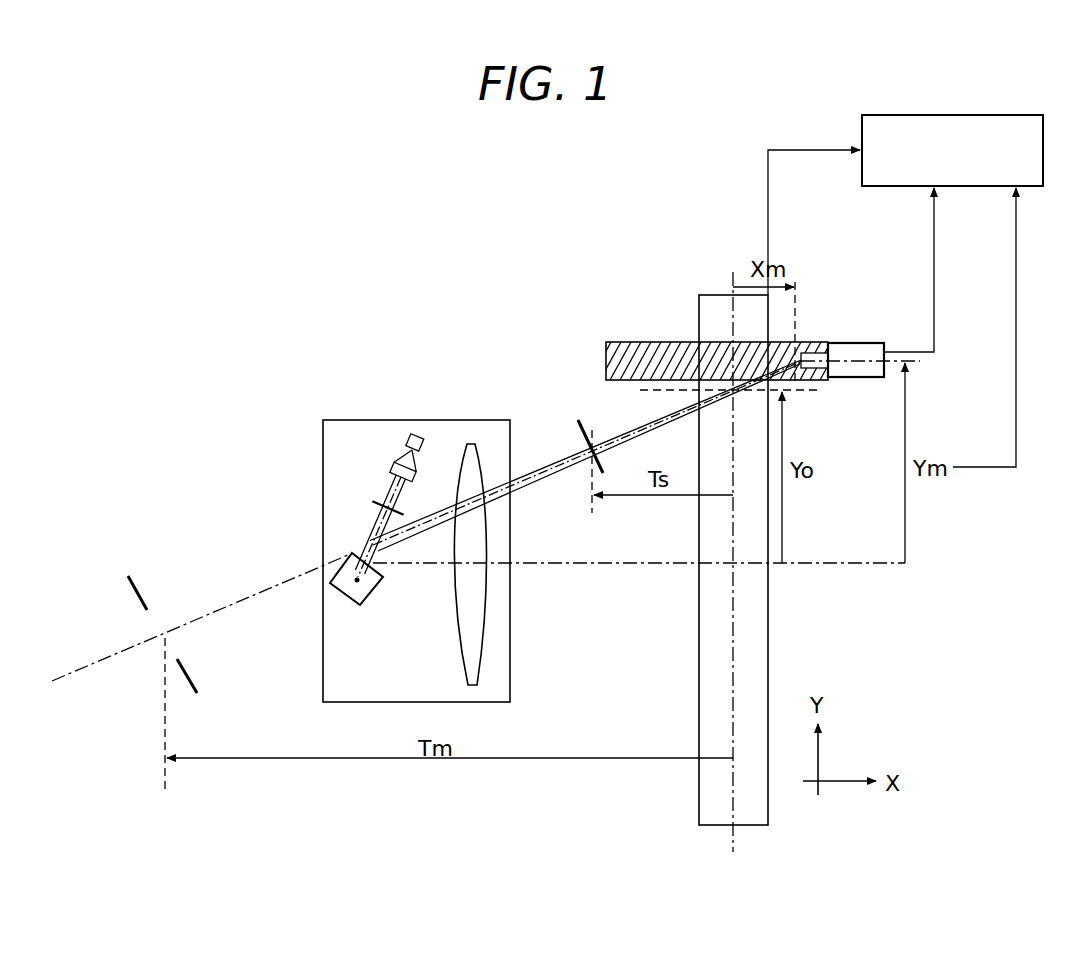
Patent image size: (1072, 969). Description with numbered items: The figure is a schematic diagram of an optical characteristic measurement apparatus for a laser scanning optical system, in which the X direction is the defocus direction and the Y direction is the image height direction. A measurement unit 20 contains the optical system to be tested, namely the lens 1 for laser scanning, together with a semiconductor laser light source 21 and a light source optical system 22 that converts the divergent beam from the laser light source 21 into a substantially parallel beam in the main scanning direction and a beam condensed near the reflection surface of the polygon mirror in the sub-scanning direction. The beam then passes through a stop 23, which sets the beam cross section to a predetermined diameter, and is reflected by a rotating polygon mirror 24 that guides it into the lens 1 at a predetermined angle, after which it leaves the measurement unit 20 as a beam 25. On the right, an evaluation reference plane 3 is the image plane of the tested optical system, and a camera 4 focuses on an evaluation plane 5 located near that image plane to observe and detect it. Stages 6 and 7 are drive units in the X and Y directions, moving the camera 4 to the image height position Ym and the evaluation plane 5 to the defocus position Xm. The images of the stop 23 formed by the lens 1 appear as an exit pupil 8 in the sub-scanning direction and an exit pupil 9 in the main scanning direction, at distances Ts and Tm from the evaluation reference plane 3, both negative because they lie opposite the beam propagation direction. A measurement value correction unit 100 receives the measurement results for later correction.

The measurement value correction unit 100 is at (988, 113).
The lens for laser scanning 1 is at (483, 633).
The evaluation reference plane 3 is at (732, 275).
The camera 4 is at (858, 350).
The evaluation plane 5 is at (797, 302).
The stage 6 is at (647, 348).
The stage 7 is at (752, 632).
The exit pupil 8 is at (582, 418).
The exit pupil 9 is at (197, 685).
The measurement unit 20 is at (445, 433).
The semiconductor laser light source 21 is at (415, 435).
The light source optical system 22 is at (393, 463).
The stop 23 is at (372, 505).
The rotating polygon mirror 24 is at (353, 594).
The beam 25 is at (540, 468).